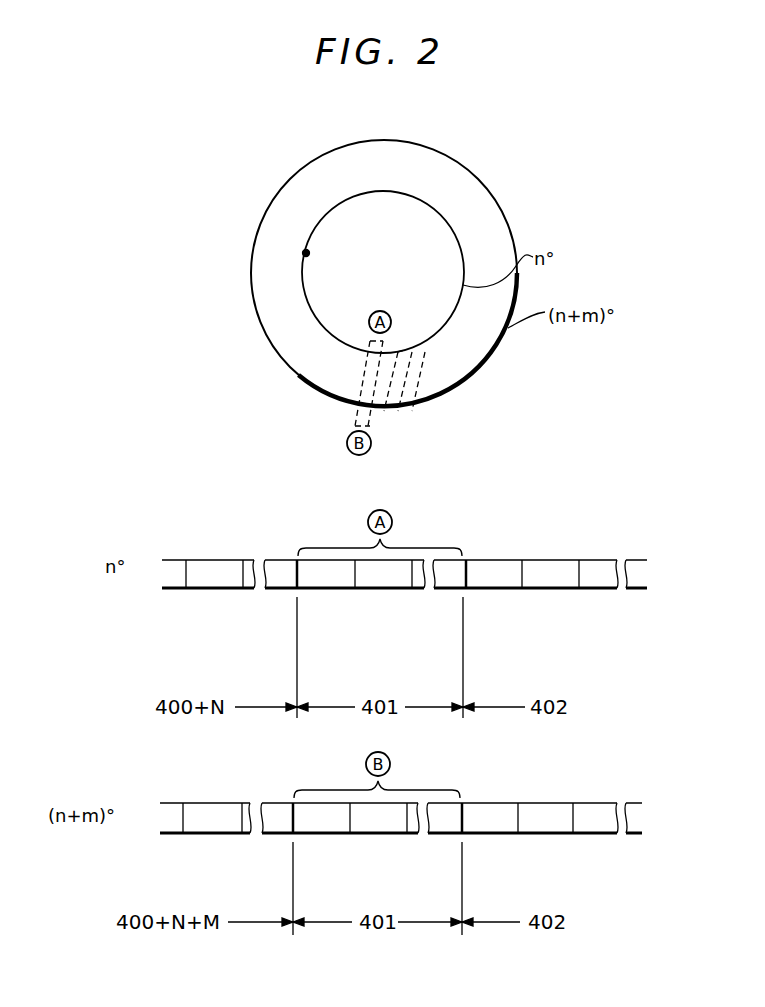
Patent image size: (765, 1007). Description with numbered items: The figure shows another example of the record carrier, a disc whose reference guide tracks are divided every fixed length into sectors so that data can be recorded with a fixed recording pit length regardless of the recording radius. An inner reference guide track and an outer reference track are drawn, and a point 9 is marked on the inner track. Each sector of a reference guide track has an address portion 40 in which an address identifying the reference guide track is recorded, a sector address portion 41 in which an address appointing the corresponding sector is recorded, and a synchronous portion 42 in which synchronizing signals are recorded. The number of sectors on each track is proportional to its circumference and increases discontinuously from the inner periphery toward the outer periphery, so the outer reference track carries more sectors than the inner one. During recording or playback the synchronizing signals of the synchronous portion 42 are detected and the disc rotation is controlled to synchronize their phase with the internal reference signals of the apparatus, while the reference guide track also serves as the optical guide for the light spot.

The reference point on inner track 9 is at (306, 253).
The address portion 40 is at (501, 861).
The sector address portion 41 is at (556, 861).
The synchronous portion 42 is at (611, 861).